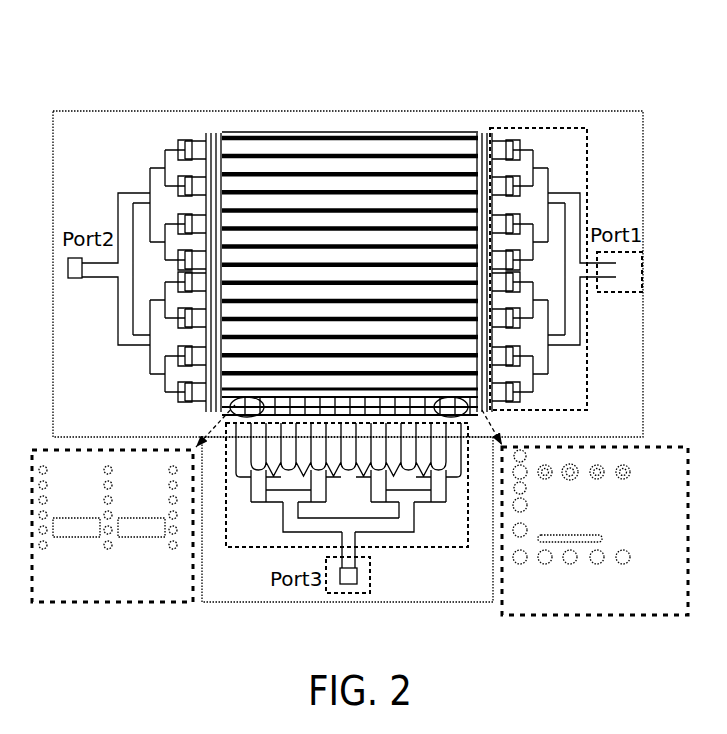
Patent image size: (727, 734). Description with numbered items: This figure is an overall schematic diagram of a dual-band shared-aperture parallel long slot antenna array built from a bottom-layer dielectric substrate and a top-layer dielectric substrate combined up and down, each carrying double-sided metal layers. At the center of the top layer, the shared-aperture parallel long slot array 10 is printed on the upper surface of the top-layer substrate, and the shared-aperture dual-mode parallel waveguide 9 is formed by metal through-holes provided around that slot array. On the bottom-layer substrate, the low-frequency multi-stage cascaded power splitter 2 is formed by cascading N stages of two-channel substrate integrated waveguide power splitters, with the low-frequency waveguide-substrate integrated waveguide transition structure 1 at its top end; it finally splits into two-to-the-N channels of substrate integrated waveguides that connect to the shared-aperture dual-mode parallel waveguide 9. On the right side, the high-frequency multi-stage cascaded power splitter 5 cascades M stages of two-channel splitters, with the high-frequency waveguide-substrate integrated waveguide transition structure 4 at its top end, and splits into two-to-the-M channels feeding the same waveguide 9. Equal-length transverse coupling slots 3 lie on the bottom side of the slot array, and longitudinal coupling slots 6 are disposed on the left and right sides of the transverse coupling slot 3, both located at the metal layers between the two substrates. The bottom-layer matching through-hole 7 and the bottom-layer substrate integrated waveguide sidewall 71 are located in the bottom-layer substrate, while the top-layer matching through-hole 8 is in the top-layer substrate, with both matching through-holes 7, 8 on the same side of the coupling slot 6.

The low-frequency waveguide-substrate integrated waveguide transition structure 1 is at (348, 606).
The low-frequency multi-stage cascaded power splitter 2 is at (468, 548).
The transverse coupling slot 3 is at (75, 540).
The high-frequency waveguide-substrate integrated waveguide transition structure 4 is at (645, 272).
The high-frequency multi-stage cascaded power splitter 5 is at (589, 406).
The longitudinal coupling slot 6 is at (572, 536).
The bottom-layer matching through-hole 7 is at (568, 483).
The top-layer matching through-hole 8 is at (580, 477).
The bottom-layer substrate integrated waveguide sidewall 71 is at (575, 560).
The shared-aperture dual-mode parallel waveguide 9 is at (254, 131).
The shared-aperture parallel long slot array 10 is at (349, 139).